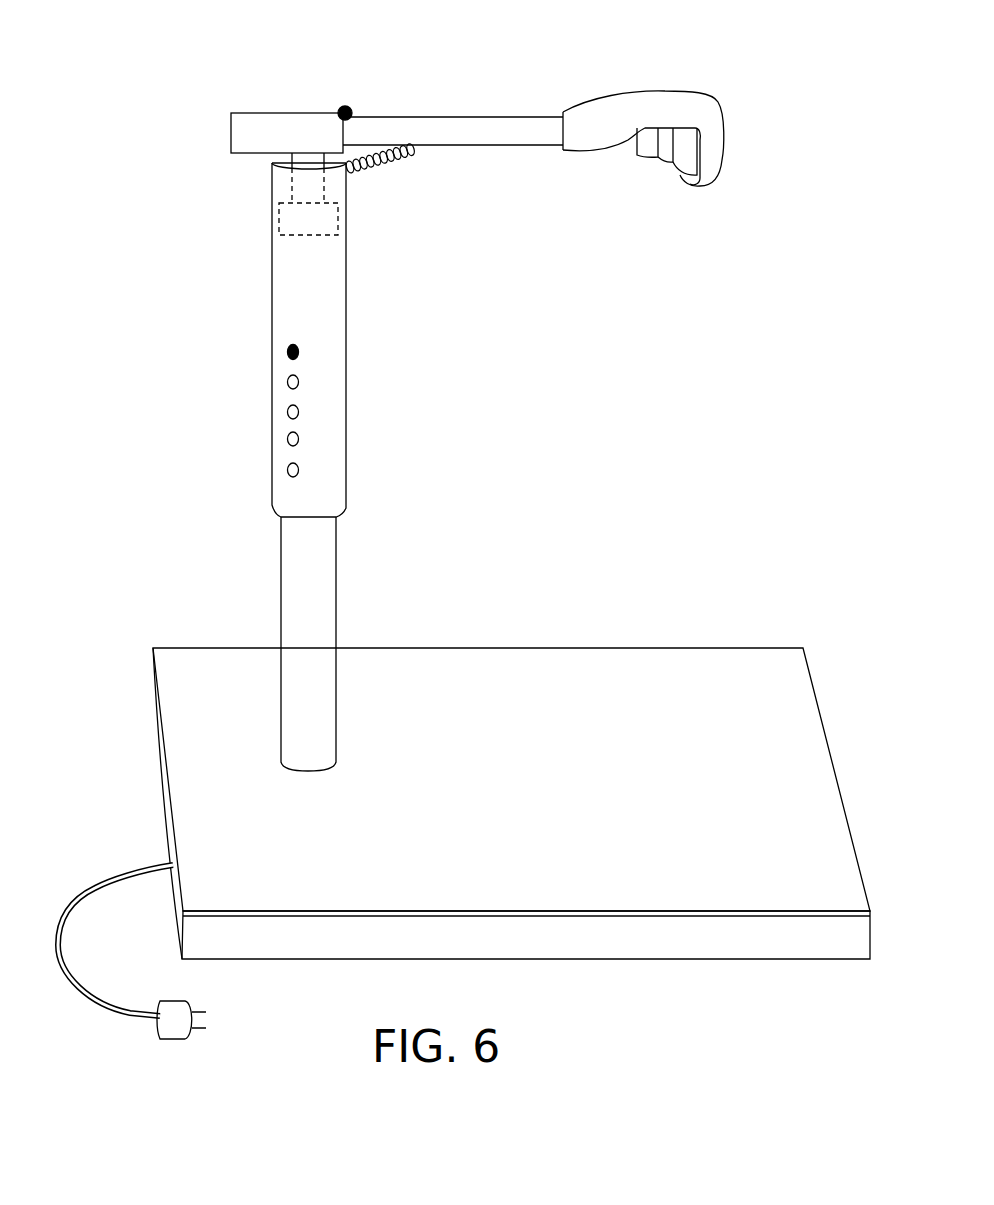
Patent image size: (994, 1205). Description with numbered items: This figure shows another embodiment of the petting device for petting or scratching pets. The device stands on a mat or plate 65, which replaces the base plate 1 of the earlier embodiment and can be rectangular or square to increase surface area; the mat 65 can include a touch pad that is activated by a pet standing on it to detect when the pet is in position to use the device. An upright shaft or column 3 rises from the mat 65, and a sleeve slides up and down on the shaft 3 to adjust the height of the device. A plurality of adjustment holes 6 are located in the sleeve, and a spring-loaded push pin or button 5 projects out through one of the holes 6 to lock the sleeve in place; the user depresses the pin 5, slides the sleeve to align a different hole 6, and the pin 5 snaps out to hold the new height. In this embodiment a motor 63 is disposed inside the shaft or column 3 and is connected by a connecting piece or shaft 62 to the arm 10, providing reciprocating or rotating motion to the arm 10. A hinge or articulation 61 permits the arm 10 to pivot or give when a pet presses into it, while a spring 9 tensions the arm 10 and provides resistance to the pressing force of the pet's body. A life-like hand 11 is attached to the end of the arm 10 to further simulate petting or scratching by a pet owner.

The base plate 1 is at (142, 1014).
The shaft 3 is at (297, 602).
The push pin 5 is at (288, 357).
The adjustment holes 6 is at (295, 416).
The spring 9 is at (376, 174).
The arm 10 is at (432, 132).
The life-like hand 11 is at (695, 100).
The hinge 61 is at (345, 106).
The connecting piece 62 is at (275, 158).
The motor 63 is at (287, 223).
The mat 65 is at (620, 704).